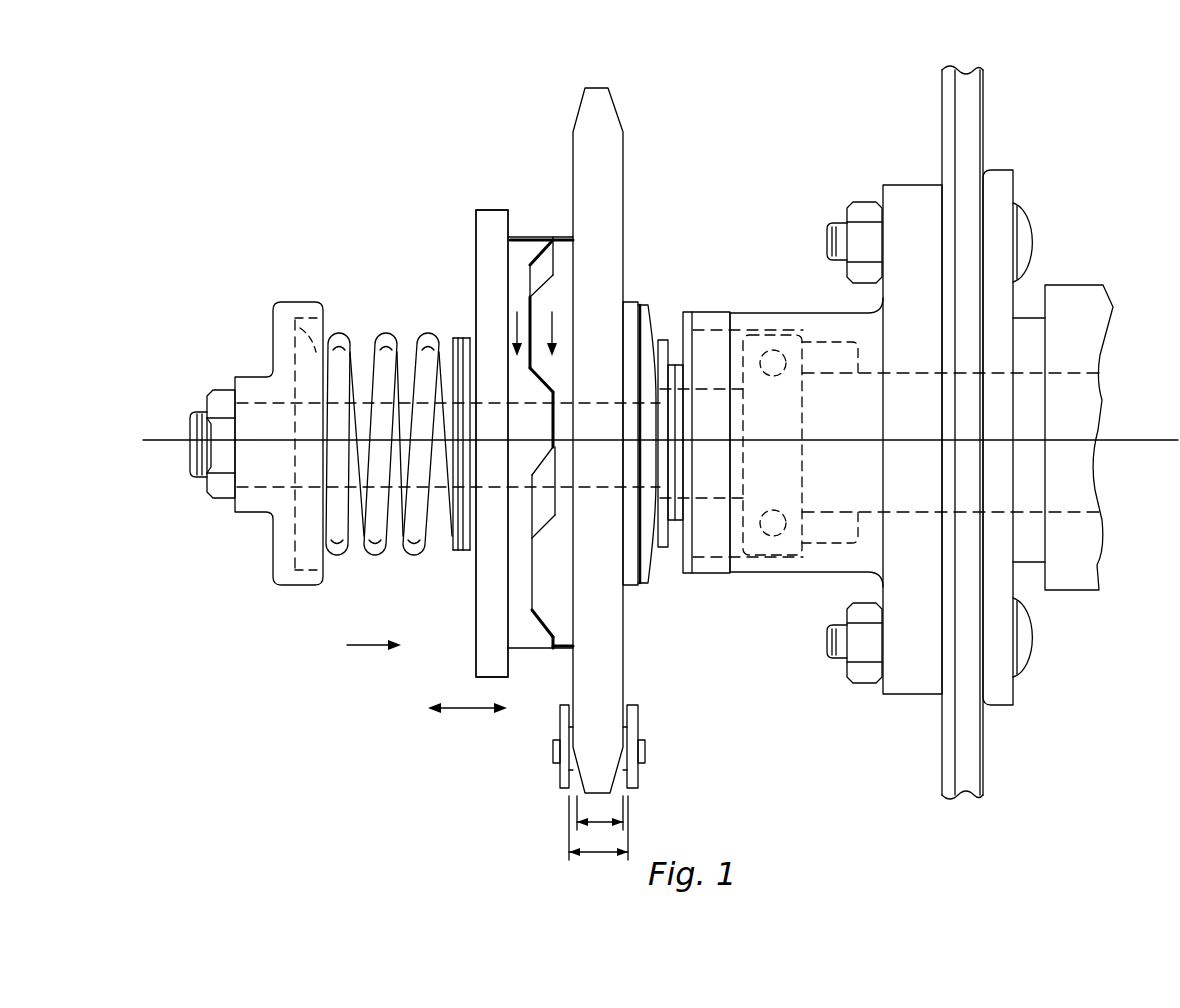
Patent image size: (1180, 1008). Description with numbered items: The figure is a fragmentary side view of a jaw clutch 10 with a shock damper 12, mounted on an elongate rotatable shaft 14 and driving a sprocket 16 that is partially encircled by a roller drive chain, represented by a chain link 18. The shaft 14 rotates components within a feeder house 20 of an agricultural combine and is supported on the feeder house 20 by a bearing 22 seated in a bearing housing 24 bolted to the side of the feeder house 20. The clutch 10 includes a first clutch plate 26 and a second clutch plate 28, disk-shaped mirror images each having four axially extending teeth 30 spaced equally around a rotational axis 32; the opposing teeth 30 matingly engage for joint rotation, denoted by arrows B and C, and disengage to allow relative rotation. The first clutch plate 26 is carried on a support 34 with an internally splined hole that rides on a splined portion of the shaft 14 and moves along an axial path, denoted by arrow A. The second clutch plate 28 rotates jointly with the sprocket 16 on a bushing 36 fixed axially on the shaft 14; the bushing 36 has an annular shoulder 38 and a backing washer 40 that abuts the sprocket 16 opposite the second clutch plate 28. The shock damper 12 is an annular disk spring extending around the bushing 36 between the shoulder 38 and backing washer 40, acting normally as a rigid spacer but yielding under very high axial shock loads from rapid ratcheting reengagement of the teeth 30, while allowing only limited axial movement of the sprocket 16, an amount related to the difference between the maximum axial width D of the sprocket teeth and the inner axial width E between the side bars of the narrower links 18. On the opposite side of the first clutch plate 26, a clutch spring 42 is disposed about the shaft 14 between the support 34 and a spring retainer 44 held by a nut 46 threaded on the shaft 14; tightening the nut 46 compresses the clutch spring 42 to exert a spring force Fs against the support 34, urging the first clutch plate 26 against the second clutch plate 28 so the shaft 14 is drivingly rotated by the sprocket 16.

The jaw clutch 10 is at (782, 116).
The shock damper 12 is at (648, 292).
The rotatable shaft 14 is at (192, 466).
The sprocket 16 is at (623, 672).
The chain link 18 is at (638, 777).
The feeder house 20 is at (942, 79).
The bearing 22 is at (778, 560).
The bearing housing 24 is at (883, 697).
The first clutch plate 26 is at (523, 237).
The second clutch plate 28 is at (562, 237).
The teeth 30 is at (573, 242).
The rotational axis 32 is at (1130, 432).
The support 34 is at (477, 655).
The bushing 36 is at (660, 338).
The annular shoulder 38 is at (685, 312).
The backing washer 40 is at (625, 302).
The clutch spring 42 is at (378, 556).
The spring retainer 44 is at (270, 584).
The nut 46 is at (212, 496).
The axial path A is at (470, 710).
The joint rotation arrow B is at (553, 333).
The joint rotation arrow C is at (515, 333).
The maximum axial width D is at (605, 820).
The inner axial width E is at (592, 852).
The spring force Fs is at (365, 648).